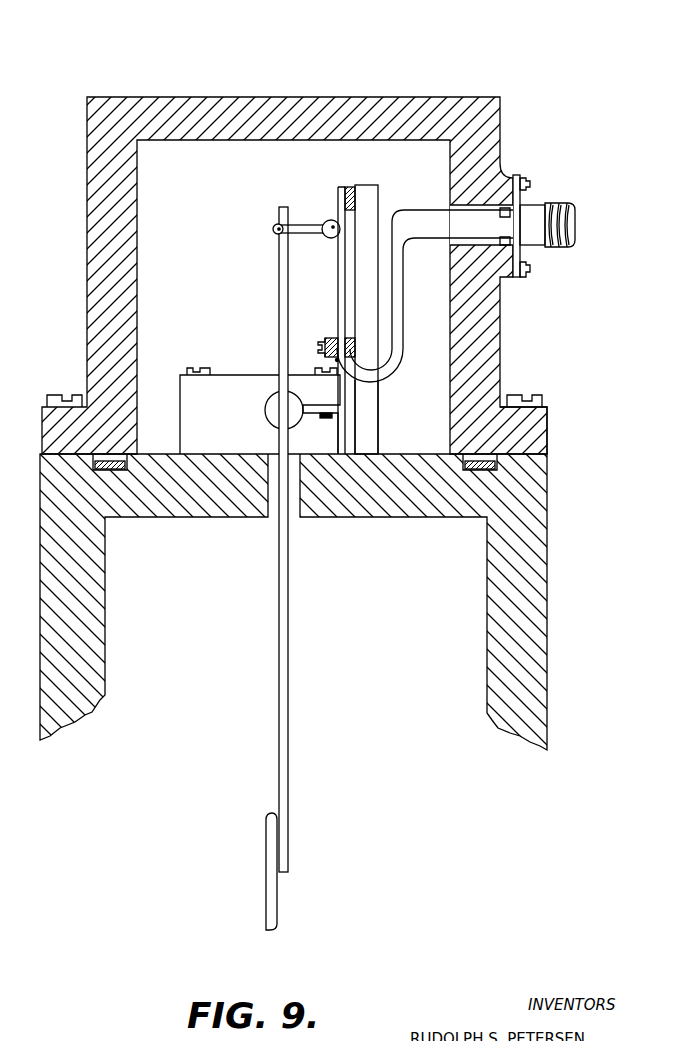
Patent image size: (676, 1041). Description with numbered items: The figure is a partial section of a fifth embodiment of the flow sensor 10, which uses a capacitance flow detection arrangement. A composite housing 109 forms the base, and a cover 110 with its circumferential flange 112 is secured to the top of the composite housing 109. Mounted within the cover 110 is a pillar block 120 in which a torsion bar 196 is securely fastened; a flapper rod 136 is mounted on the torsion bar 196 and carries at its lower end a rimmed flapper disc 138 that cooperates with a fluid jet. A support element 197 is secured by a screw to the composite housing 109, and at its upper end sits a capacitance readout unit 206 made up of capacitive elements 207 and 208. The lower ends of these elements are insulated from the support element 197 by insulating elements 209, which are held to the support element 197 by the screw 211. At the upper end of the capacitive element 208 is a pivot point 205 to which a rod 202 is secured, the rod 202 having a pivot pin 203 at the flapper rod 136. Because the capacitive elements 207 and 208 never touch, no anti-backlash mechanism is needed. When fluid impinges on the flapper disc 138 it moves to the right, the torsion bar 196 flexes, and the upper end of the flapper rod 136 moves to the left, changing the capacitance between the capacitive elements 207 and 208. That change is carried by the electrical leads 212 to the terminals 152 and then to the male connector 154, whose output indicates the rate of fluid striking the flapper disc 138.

The flow sensor 10 is at (569, 77).
The composite housing 109 is at (550, 492).
The cover 110 is at (495, 342).
The circumferential flange 112 is at (545, 428).
The pillar block 120 is at (333, 437).
The flapper rod 136 is at (288, 620).
The rimmed flapper disc 138 is at (272, 881).
The terminals 152 is at (505, 240).
The male connector 154 is at (575, 217).
The torsion bar 196 is at (270, 398).
The support element 197 is at (373, 396).
The rod 202 is at (308, 225).
The pivot pin 203 is at (276, 235).
The pivot point 205 is at (330, 237).
The capacitance readout unit 206 is at (345, 187).
The capacitive element 207 is at (348, 237).
The capacitive element 208 is at (352, 276).
The insulating elements 209 is at (353, 352).
The screw 211 is at (320, 345).
The electrical leads 212 is at (447, 240).